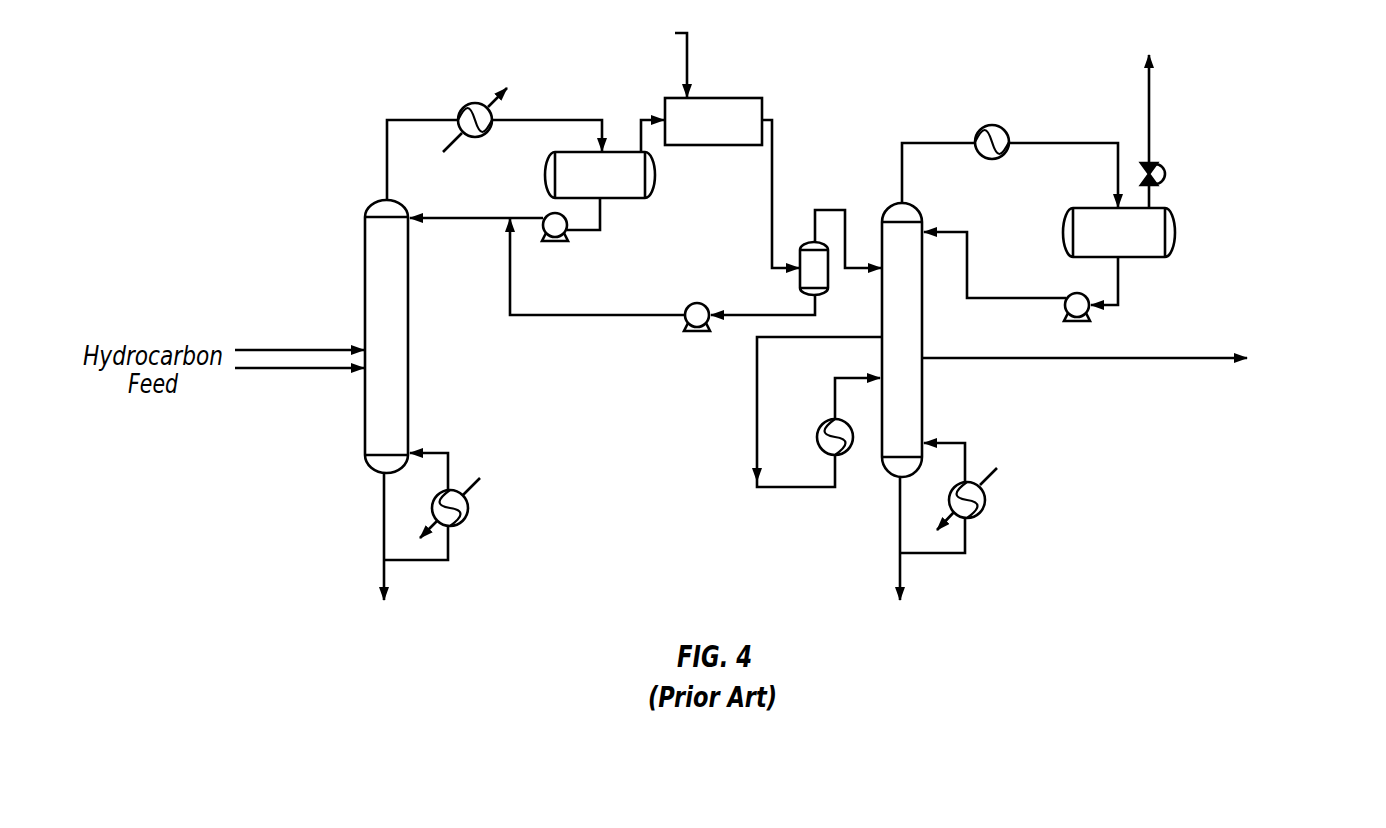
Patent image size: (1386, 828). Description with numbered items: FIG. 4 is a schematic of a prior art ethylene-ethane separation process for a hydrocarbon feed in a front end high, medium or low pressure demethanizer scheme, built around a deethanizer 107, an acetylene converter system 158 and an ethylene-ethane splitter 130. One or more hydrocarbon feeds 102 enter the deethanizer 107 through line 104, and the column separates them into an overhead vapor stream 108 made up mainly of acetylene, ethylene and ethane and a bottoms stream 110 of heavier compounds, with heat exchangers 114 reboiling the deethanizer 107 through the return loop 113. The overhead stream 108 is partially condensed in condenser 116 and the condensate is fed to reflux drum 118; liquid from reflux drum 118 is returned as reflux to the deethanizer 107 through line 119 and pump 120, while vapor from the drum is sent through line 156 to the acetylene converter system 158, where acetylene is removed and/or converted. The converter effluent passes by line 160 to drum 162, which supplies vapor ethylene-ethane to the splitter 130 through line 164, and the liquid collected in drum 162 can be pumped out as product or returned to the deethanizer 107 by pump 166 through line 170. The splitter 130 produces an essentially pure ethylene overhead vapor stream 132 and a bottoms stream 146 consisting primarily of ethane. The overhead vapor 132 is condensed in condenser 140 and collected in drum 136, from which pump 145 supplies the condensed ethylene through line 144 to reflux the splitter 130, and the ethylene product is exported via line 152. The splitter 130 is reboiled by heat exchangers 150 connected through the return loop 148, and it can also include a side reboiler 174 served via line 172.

The hydrocarbon feed 102 is at (299, 332).
The line 104 is at (299, 383).
The deethanizer 107 is at (346, 336).
The overhead vapor stream 108 is at (453, 160).
The bottoms stream 110 is at (357, 557).
The reboiler return line 113 is at (439, 527).
The heat exchangers 114 is at (473, 520).
The condenser 116 is at (460, 112).
The reflux drum 118 is at (558, 177).
The line 119 is at (626, 217).
The pump 120 is at (516, 245).
The splitter 130 is at (944, 340).
The overhead vapor stream 132 is at (970, 167).
The drum 136 is at (1163, 156).
The condenser 140 is at (1016, 111).
The line 144 is at (1149, 282).
The pump 145 is at (1032, 292).
The bottoms stream 146 is at (876, 559).
The reboiler return line 148 is at (950, 517).
The heat exchangers 150 is at (1002, 508).
The line 152 is at (1142, 363).
The line 156 is at (624, 103).
The acetylene converter system 158 is at (721, 80).
The reactor effluent line 160 is at (745, 194).
The drum 162 is at (838, 287).
The line 164 is at (851, 225).
The pump 166 is at (724, 329).
The liquid recycle line 170 is at (597, 280).
The line 172 is at (777, 412).
The side reboiler 174 is at (808, 421).